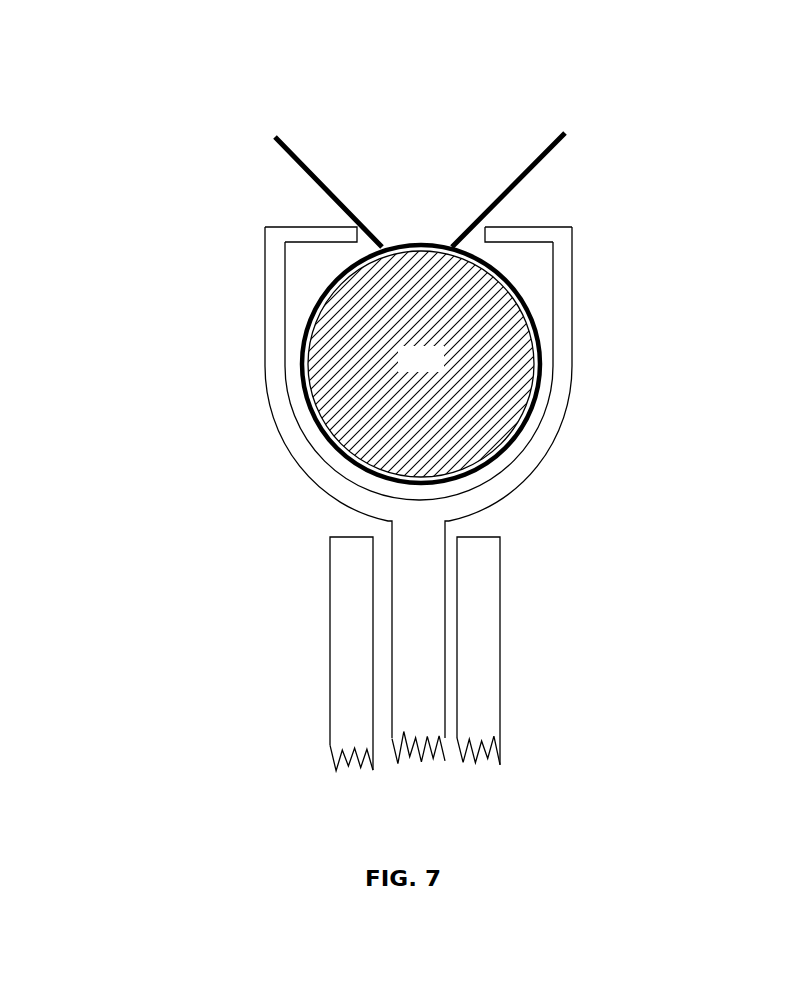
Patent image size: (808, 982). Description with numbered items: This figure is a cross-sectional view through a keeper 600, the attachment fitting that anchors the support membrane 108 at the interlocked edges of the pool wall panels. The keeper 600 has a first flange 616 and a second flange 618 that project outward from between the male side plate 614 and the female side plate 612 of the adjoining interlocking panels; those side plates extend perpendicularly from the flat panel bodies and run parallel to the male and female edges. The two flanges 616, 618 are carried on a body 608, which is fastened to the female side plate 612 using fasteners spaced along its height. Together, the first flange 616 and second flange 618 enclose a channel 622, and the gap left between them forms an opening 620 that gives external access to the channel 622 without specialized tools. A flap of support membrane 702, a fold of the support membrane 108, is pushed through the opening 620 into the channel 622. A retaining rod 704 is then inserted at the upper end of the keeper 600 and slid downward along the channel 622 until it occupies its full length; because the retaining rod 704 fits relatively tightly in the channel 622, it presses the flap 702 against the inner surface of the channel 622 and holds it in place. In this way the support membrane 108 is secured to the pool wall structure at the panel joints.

The keeper 600 is at (615, 195).
The support membrane 108 is at (273, 150).
The channel 622 is at (312, 267).
The first flange 616 is at (276, 323).
The second flange 618 is at (560, 353).
The opening 620 is at (408, 225).
The flap of support membrane 702 is at (303, 410).
The retaining rod 704 is at (440, 370).
The male side plate 614 is at (355, 665).
The female side plate 612 is at (473, 667).
The body 608 is at (427, 757).